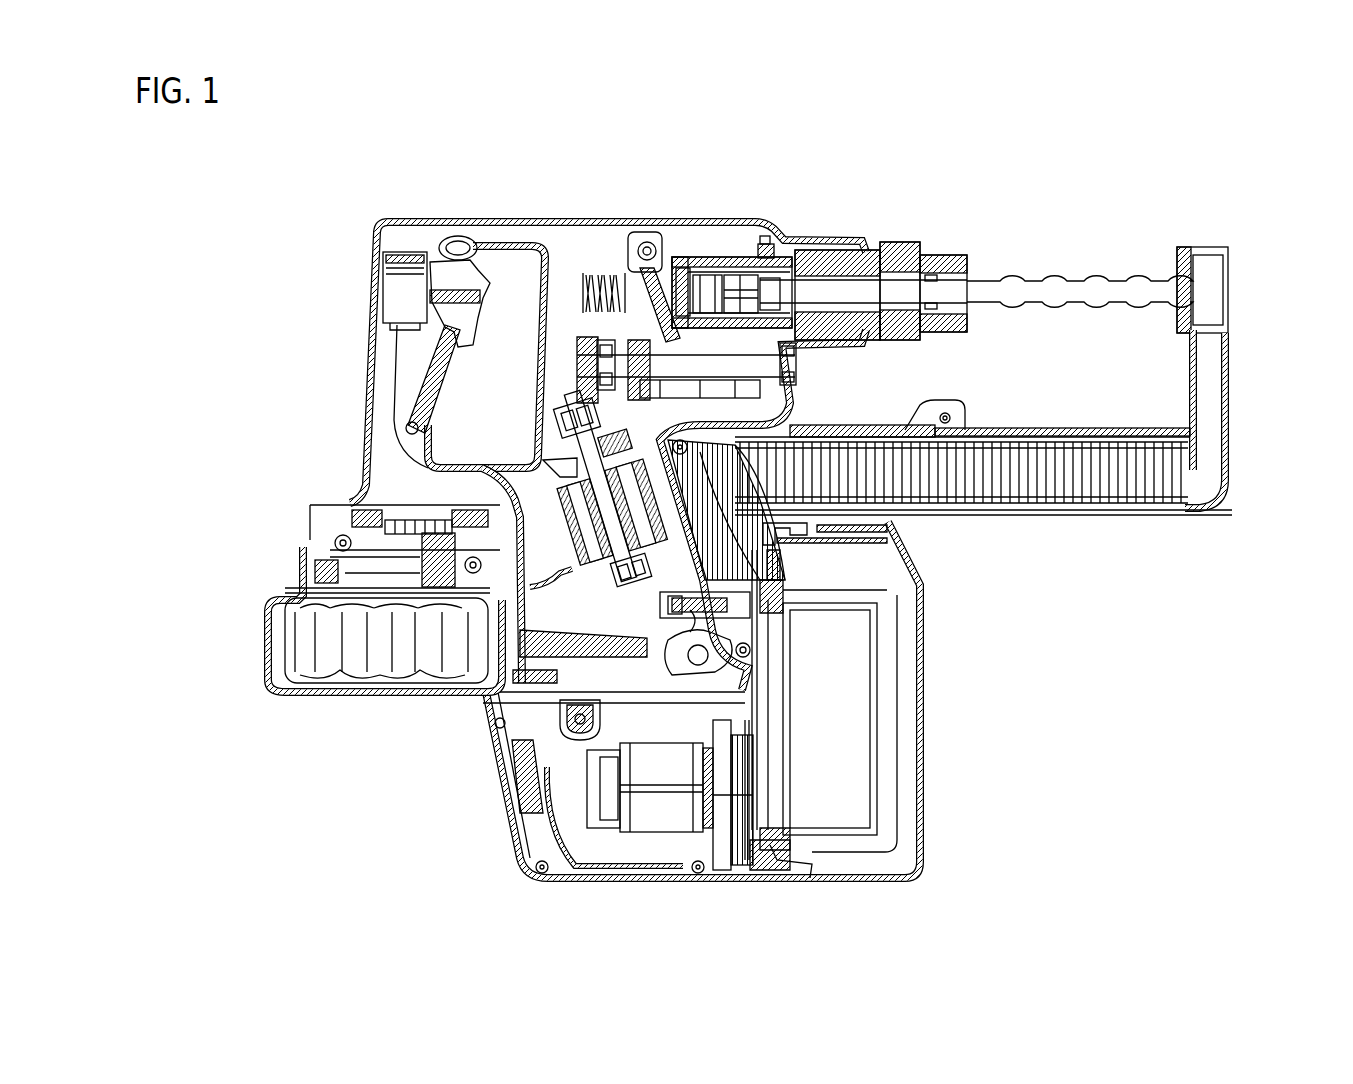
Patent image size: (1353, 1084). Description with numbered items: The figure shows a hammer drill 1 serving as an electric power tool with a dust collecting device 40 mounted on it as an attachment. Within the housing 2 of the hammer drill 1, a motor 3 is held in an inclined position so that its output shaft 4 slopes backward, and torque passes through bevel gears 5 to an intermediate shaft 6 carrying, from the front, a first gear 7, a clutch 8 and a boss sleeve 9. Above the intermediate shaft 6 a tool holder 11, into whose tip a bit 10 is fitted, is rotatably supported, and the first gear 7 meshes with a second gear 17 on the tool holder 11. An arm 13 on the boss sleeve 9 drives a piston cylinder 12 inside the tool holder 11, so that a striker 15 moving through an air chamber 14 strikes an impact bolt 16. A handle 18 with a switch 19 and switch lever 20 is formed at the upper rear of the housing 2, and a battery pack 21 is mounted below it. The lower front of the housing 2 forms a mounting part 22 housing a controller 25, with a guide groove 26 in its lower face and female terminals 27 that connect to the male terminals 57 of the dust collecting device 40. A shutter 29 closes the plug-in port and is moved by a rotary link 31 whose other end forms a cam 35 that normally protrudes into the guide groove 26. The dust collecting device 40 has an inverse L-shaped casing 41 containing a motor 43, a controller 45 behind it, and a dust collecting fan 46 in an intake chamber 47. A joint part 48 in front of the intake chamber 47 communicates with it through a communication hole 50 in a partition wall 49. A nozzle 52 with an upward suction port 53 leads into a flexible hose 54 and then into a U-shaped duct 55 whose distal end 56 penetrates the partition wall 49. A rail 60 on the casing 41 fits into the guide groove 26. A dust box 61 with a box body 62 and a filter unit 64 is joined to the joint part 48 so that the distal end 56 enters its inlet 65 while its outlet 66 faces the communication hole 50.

The hammer drill 1 is at (590, 208).
The housing 2 is at (668, 256).
The motor 3 is at (537, 477).
The output shaft 4 is at (557, 436).
The bevel gears 5 is at (558, 397).
The intermediate shaft 6 is at (798, 367).
The first gear 7 is at (765, 385).
The clutch 8 is at (687, 276).
The boss sleeve 9 is at (636, 345).
The bit 10 is at (1047, 288).
The tool holder 11 is at (847, 262).
The piston cylinder 12 is at (740, 277).
The arm 13 is at (646, 243).
The air chamber 14 is at (710, 280).
The striker 15 is at (758, 273).
The impact bolt 16 is at (813, 280).
The second gear 17 is at (778, 242).
The handle 18 is at (372, 351).
The switch 19 is at (405, 262).
The switch lever 20 is at (493, 302).
The battery pack 21 is at (367, 657).
The mounting part 22 is at (533, 657).
The controller 25 is at (497, 692).
The guide groove 26 is at (557, 860).
The female terminals 27 is at (662, 607).
The shutter 29 is at (750, 658).
The rotary link 31 is at (743, 688).
The cam 35 is at (670, 770).
The dust collecting device 40 is at (913, 420).
The casing 41 is at (867, 427).
The motor 43 is at (648, 815).
The controller 45 is at (527, 800).
The dust collecting fan 46 is at (733, 860).
The intake chamber 47 is at (753, 860).
The joint part 48 is at (817, 525).
The partition wall 49 is at (760, 724).
The communication hole 50 is at (763, 800).
The nozzle 52 is at (1143, 430).
The suction port 53 is at (1207, 266).
The flexible hose 54 is at (1020, 457).
The duct 55 is at (745, 470).
The distal end 56 is at (777, 568).
The male terminals 57 is at (673, 588).
The rail 60 is at (603, 770).
The dust box 61 is at (927, 647).
The box body 62 is at (927, 801).
The filter unit 64 is at (887, 751).
The inlet 65 is at (700, 565).
The outlet 66 is at (783, 818).